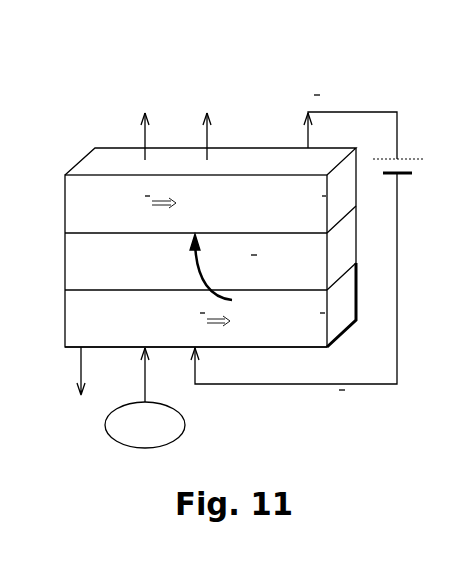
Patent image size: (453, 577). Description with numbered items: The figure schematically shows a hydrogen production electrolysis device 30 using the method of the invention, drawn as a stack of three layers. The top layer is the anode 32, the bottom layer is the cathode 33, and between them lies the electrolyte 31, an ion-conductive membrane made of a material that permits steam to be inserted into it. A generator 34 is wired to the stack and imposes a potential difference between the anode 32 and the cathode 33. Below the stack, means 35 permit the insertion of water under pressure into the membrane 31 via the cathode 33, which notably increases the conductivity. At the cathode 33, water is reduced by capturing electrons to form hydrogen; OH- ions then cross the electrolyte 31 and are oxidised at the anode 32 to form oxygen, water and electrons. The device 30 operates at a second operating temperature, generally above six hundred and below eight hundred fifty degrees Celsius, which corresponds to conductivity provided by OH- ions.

The electrolysis device 30 is at (62, 158).
The electrolyte 31 is at (97, 274).
The anode 32 is at (97, 217).
The cathode 33 is at (97, 334).
The generator 34 is at (410, 153).
The means permitting the insertion under pressure of water 35 is at (177, 447).